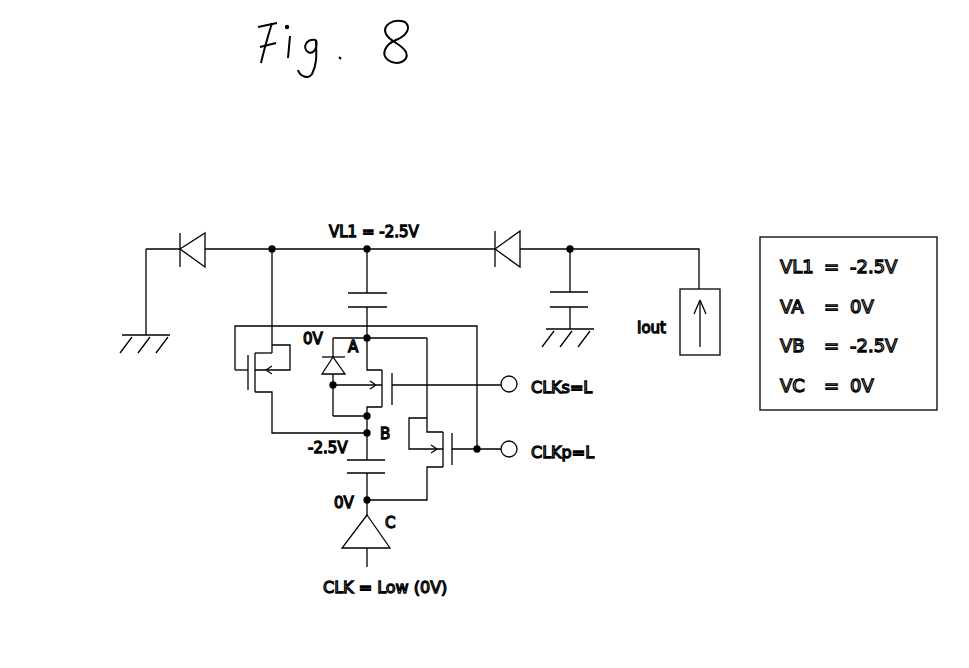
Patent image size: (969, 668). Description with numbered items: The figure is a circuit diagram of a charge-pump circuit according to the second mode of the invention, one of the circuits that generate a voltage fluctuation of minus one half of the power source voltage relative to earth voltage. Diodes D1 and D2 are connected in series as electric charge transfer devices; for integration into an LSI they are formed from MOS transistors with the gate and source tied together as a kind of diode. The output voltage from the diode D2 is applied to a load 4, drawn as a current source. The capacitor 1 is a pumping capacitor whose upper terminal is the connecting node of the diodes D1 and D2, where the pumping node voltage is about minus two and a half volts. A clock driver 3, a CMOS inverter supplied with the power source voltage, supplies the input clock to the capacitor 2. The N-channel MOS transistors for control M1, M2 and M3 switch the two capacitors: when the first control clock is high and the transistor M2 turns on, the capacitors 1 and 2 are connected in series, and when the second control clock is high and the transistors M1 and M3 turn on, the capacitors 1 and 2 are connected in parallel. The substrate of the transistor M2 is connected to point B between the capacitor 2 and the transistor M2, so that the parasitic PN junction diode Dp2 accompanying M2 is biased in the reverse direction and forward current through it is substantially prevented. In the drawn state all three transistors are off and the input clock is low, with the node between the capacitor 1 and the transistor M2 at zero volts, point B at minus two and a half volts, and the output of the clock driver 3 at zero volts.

The capacitor 1 is at (396, 298).
The capacitor 2 is at (345, 467).
The clock driver 3 is at (342, 534).
The load 4 is at (693, 363).
The diode D1 is at (203, 223).
The diode D2 is at (512, 223).
The parasitic PN junction diode Dp2 is at (318, 368).
The MOS transistor for control M1 is at (301, 389).
The MOS transistor for control M2 is at (417, 385).
The MOS transistor for control M3 is at (434, 419).